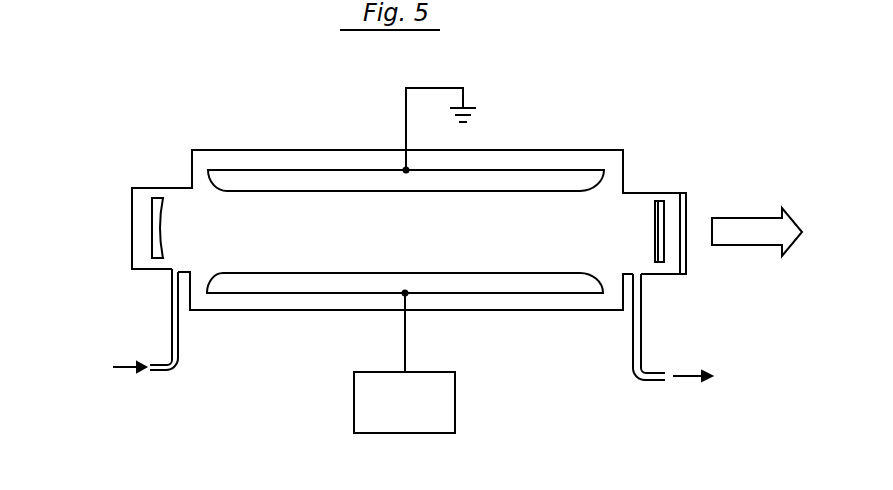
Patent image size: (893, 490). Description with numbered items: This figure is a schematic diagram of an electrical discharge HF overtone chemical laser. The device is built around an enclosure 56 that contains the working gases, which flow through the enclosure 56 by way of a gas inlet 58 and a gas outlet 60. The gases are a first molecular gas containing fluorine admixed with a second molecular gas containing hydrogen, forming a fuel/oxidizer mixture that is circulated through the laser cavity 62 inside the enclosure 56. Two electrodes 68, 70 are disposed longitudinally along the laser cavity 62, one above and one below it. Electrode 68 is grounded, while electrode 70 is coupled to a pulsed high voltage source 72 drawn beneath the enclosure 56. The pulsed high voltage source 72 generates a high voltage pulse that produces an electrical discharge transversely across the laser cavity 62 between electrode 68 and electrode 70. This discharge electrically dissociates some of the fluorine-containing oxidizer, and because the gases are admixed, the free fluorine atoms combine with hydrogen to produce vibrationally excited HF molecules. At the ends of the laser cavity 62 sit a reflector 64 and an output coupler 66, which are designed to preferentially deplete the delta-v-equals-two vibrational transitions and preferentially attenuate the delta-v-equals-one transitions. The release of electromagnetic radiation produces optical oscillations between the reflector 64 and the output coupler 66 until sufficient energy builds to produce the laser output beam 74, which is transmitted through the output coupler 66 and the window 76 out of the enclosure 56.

The enclosure 56 is at (281, 310).
The gas inlet 58 is at (172, 328).
The gas outlet 60 is at (633, 345).
The laser cavity 62 is at (305, 218).
The reflector 64 is at (150, 212).
The output coupler 66 is at (665, 202).
The electrode 68 is at (537, 172).
The electrode 70 is at (447, 294).
The pulsed high voltage source 72 is at (449, 433).
The laser output beam 74 is at (756, 248).
The window 76 is at (687, 204).